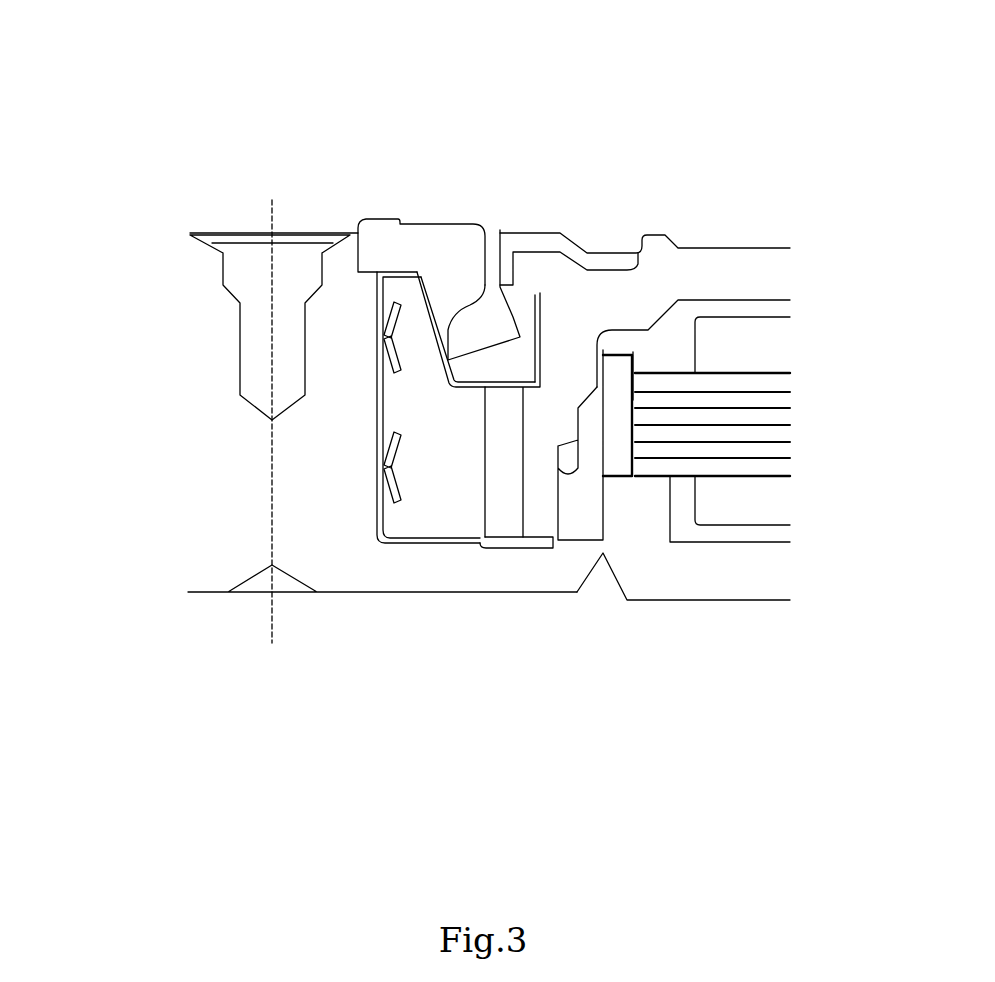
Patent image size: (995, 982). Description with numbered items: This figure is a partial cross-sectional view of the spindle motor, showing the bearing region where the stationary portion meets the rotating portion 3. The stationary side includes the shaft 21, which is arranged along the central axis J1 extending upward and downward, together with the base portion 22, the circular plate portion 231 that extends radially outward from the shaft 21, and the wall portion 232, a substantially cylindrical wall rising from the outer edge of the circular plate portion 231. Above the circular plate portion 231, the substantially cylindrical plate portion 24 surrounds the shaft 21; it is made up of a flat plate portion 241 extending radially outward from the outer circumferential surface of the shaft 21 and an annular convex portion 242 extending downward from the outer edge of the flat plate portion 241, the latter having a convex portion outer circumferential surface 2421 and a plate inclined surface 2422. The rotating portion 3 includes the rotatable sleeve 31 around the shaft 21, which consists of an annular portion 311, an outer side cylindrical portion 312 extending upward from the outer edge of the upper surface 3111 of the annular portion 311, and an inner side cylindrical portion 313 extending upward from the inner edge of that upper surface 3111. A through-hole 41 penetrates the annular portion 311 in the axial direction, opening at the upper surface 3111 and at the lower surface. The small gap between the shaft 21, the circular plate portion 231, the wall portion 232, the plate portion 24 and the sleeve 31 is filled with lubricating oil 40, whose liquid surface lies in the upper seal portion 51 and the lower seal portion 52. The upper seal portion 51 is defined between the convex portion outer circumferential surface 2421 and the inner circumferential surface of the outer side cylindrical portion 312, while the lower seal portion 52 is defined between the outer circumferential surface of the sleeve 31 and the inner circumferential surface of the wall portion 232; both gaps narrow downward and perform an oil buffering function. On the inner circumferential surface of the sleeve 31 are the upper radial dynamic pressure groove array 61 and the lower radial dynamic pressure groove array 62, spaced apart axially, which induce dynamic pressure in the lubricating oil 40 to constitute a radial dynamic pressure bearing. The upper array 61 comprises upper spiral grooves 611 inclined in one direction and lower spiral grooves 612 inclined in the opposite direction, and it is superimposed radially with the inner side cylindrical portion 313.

The rotating portion 3 is at (671, 149).
The central axis J1 is at (272, 262).
The lubricating oil 40 is at (373, 261).
The shaft 21 is at (323, 518).
The base portion 22 is at (642, 532).
The circular plate portion 231 is at (533, 567).
The wall portion 232 is at (587, 500).
The plate portion 24 is at (403, 48).
The flat plate portion 241 is at (447, 243).
The annular convex portion 242 is at (500, 230).
The convex portion outer circumferential surface 2421 is at (520, 335).
The plate inclined surface 2422 is at (540, 307).
The sleeve 31 is at (328, 690).
The annular portion 311 is at (462, 507).
The upper surface of the annular portion 3111 is at (450, 400).
The outer side cylindrical portion 312 is at (535, 380).
The inner side cylindrical portion 313 is at (420, 380).
The through-hole 41 is at (558, 550).
The upper seal portion 51 is at (527, 352).
The lower seal portion 52 is at (567, 462).
The upper radial dynamic pressure groove array 61 is at (80, 302).
The upper spiral grooves 611 is at (381, 316).
The lower spiral grooves 612 is at (382, 363).
The lower radial dynamic pressure groove array 62 is at (376, 467).